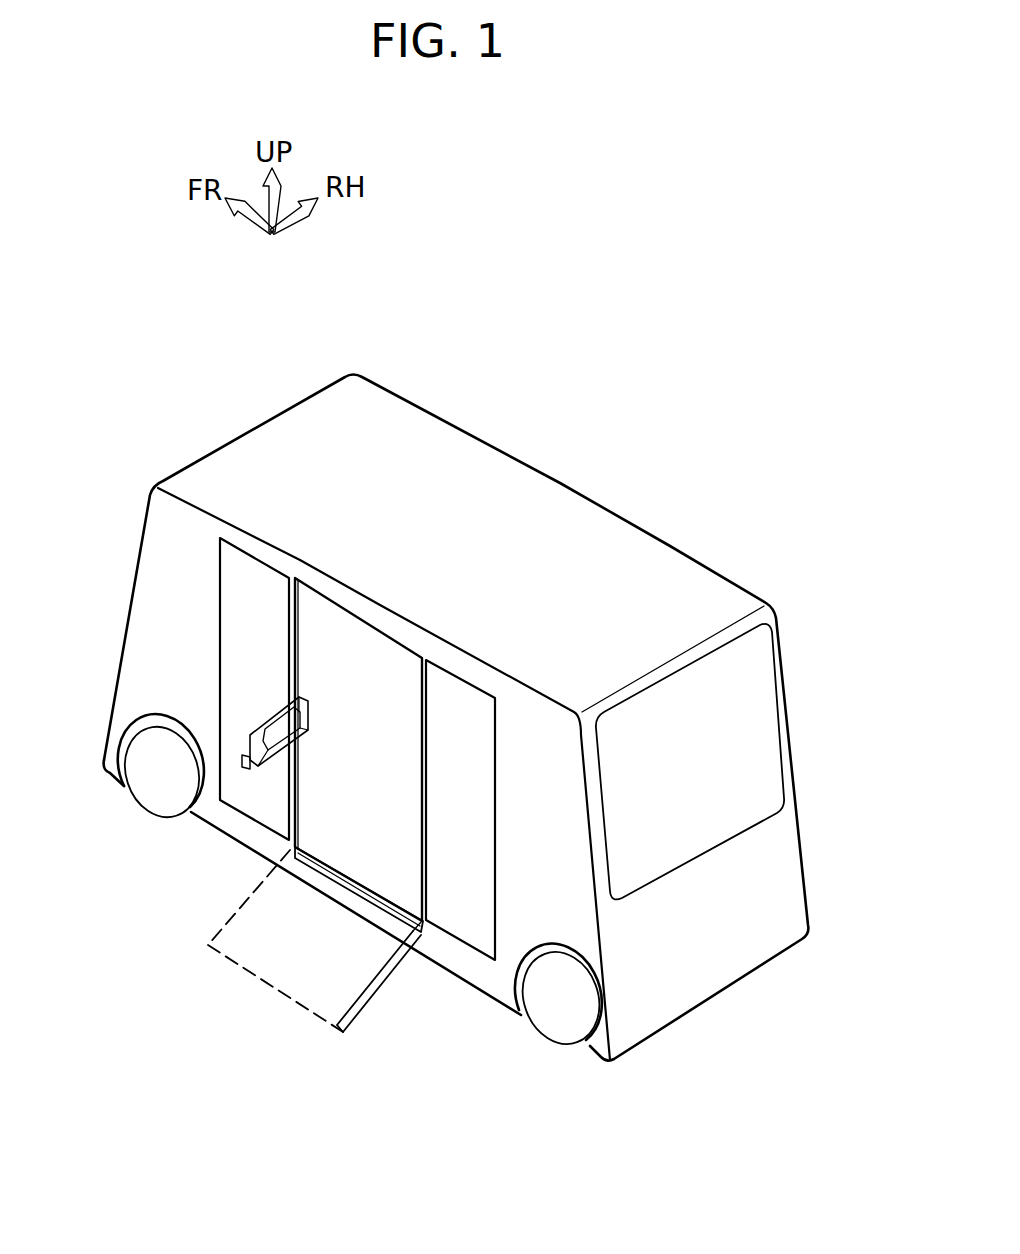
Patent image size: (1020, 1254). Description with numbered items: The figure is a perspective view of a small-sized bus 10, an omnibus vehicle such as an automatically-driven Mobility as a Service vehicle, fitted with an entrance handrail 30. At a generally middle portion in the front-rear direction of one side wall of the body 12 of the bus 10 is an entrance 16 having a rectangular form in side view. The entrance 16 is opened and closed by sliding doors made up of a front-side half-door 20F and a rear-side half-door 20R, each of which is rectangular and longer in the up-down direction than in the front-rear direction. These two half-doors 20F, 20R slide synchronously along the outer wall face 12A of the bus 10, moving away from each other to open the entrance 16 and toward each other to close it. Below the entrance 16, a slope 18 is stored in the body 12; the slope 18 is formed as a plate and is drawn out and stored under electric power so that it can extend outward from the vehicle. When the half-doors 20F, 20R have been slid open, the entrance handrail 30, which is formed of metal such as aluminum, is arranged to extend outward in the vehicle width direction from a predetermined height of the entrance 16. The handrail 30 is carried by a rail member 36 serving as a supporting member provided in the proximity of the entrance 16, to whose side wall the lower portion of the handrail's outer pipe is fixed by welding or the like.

The bus 10 is at (605, 452).
The body 12 is at (527, 488).
The outer wall face 12A is at (182, 538).
The entrance 16 is at (357, 620).
The slope 18 is at (360, 893).
The front-side half-door 20F is at (253, 600).
The rear-side half-door 20R is at (463, 700).
The entrance handrail 30 is at (249, 777).
The rail member 36 is at (240, 760).